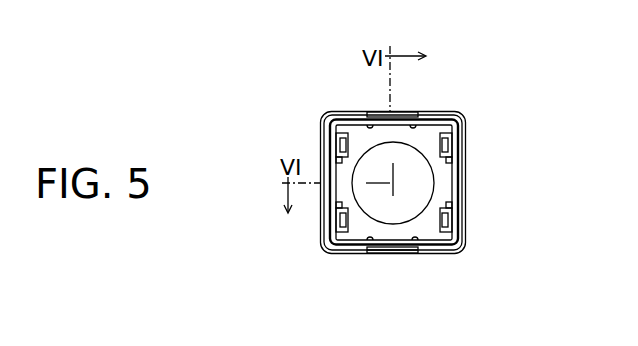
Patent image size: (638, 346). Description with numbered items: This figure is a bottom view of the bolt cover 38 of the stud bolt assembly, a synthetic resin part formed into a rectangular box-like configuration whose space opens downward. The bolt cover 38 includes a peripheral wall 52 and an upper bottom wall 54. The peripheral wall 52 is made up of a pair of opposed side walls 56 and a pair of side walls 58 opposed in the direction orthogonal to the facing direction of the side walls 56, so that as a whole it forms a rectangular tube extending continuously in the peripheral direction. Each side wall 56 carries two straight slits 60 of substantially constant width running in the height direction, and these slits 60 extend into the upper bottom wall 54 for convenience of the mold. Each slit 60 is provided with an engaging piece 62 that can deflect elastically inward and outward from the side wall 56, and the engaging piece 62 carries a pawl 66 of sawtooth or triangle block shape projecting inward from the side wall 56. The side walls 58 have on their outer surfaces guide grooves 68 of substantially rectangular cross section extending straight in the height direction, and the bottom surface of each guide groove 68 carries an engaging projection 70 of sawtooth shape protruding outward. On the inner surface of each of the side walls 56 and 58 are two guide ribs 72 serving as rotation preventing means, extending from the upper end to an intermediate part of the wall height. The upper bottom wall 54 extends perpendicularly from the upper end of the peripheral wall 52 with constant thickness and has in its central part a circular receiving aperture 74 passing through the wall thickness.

The bolt cover 38 is at (314, 261).
The peripheral wall 52 is at (341, 100).
The upper bottom wall 54 is at (432, 172).
The side walls 56 is at (462, 183).
The side walls 58 is at (447, 118).
The slits 60 is at (334, 120).
The engaging piece 62 is at (399, 181).
The pawl 66 is at (337, 138).
The guide grooves 68 is at (370, 112).
The engaging projection 70 is at (400, 185).
The guide ribs 72 is at (372, 126).
The receiving aperture 74 is at (368, 254).